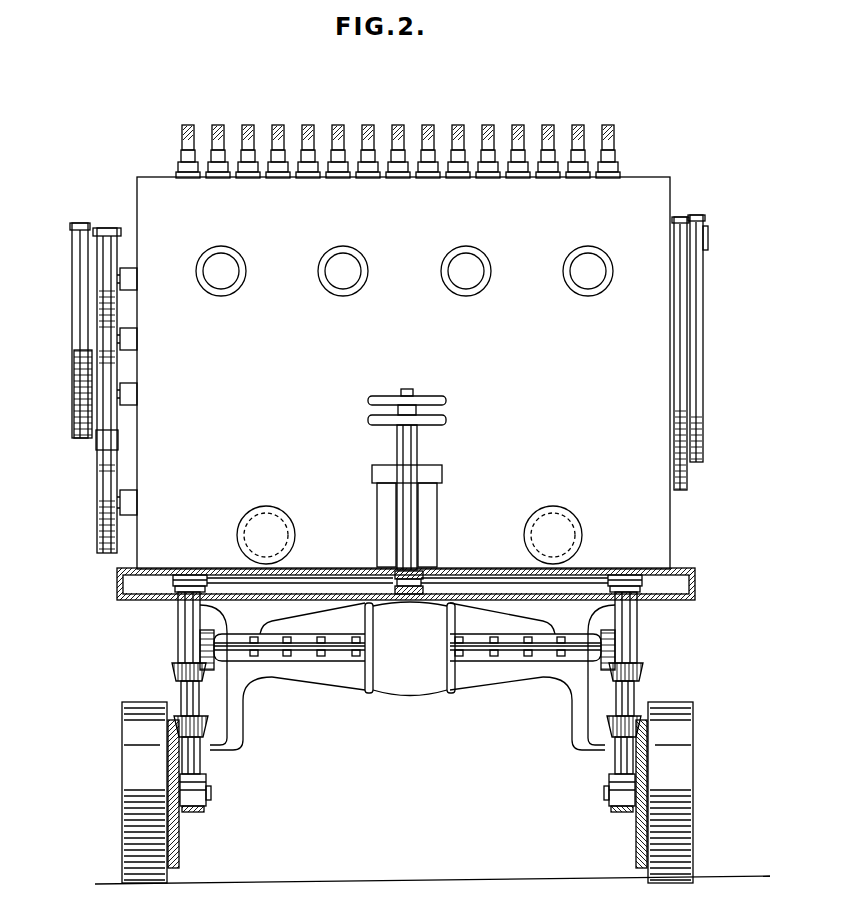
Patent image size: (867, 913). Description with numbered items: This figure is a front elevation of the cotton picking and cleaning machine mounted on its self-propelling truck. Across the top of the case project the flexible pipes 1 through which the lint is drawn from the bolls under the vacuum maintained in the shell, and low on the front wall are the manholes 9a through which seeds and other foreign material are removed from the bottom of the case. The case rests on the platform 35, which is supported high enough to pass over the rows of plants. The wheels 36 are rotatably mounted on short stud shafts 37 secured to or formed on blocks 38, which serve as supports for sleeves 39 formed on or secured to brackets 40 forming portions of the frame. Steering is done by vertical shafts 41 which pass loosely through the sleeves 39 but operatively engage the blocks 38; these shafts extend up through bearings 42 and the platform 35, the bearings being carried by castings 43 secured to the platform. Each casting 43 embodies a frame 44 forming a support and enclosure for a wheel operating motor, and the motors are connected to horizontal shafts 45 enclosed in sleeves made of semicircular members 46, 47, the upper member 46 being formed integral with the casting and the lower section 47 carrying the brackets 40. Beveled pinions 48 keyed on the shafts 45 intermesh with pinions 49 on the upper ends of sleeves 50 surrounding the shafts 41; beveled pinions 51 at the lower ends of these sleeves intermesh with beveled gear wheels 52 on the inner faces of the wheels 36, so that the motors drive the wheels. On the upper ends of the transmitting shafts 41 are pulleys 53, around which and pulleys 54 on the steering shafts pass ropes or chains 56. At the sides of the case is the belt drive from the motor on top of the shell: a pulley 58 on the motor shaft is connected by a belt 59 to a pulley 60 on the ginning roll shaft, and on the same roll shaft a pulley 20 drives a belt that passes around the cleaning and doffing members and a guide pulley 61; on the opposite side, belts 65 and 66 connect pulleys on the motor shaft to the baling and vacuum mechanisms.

The flexible pipes 1 is at (345, 127).
The manholes 9a is at (564, 486).
The pulley 20 is at (100, 440).
The platform 35 is at (117, 590).
The wheels 36 is at (122, 776).
The stud shafts 37 is at (211, 795).
The blocks 38 is at (206, 808).
The sleeves 39 is at (200, 760).
The brackets 40 is at (243, 713).
The vertical shafts 41 is at (178, 630).
The bearings 42 is at (183, 592).
The castings 43 is at (262, 633).
The frames 44 is at (418, 690).
The horizontal shafts 45 is at (214, 646).
The upper semicircular member 46 is at (497, 620).
The lower semicircular member 47 is at (487, 676).
The beveled pinions 48 is at (200, 645).
The pinions 49 is at (172, 670).
The sleeves 50 is at (181, 690).
The beveled pinions 51 is at (208, 728).
The beveled gear wheels 52 is at (180, 856).
The pulleys 53 is at (192, 574).
The pulleys 54 is at (422, 578).
The ropes or chains 56 is at (322, 578).
The pulley 58 is at (100, 226).
The belt 59 is at (80, 284).
The pulley 60 is at (80, 380).
The guide pulley 61 is at (132, 341).
The belt 65 is at (700, 263).
The belt 66 is at (681, 217).